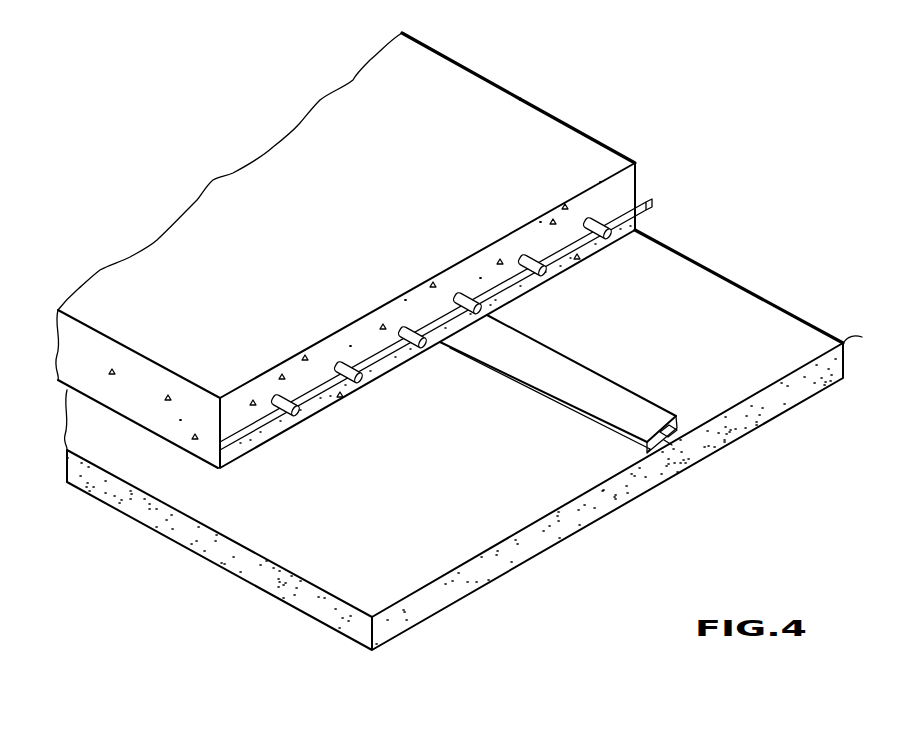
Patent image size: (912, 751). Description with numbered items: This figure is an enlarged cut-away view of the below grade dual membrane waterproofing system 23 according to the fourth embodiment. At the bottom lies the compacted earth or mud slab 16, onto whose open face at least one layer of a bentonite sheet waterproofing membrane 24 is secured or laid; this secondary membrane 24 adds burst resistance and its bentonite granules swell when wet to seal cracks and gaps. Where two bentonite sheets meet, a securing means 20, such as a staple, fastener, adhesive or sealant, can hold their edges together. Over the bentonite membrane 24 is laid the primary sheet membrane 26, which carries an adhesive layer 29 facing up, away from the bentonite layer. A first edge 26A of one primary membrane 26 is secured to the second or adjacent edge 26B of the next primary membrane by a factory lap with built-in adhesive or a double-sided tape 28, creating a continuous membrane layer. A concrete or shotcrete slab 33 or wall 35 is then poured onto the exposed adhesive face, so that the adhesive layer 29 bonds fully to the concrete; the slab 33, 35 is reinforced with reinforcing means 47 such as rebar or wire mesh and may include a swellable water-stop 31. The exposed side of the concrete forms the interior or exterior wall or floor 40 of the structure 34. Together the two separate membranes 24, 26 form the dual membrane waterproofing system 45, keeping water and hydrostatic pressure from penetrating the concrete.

The compacted earth or mud slab 16 is at (614, 497).
The securing means 20 is at (574, 375).
The dual membrane waterproofing system 23 is at (767, 101).
The bentonite sheet waterproofing membrane 24 is at (667, 247).
The primary sheet membrane 26 is at (762, 320).
The first edge of primary membrane 26A is at (185, 520).
The second or adjacent edge of primary membrane 26B is at (633, 405).
The double-sided tape or factory lap adhesive 28 is at (686, 427).
The adhesive layer 29 is at (802, 340).
The water-stop 31 is at (245, 425).
The concrete or shotcrete slab 33 is at (428, 66).
The structure or building 34 is at (477, 91).
The concrete or shotcrete wall 35 is at (597, 162).
The interior or exterior wall or floor 40 is at (546, 133).
The dual membrane waterproofing system 45 is at (727, 278).
The reinforcing means 47 is at (305, 422).